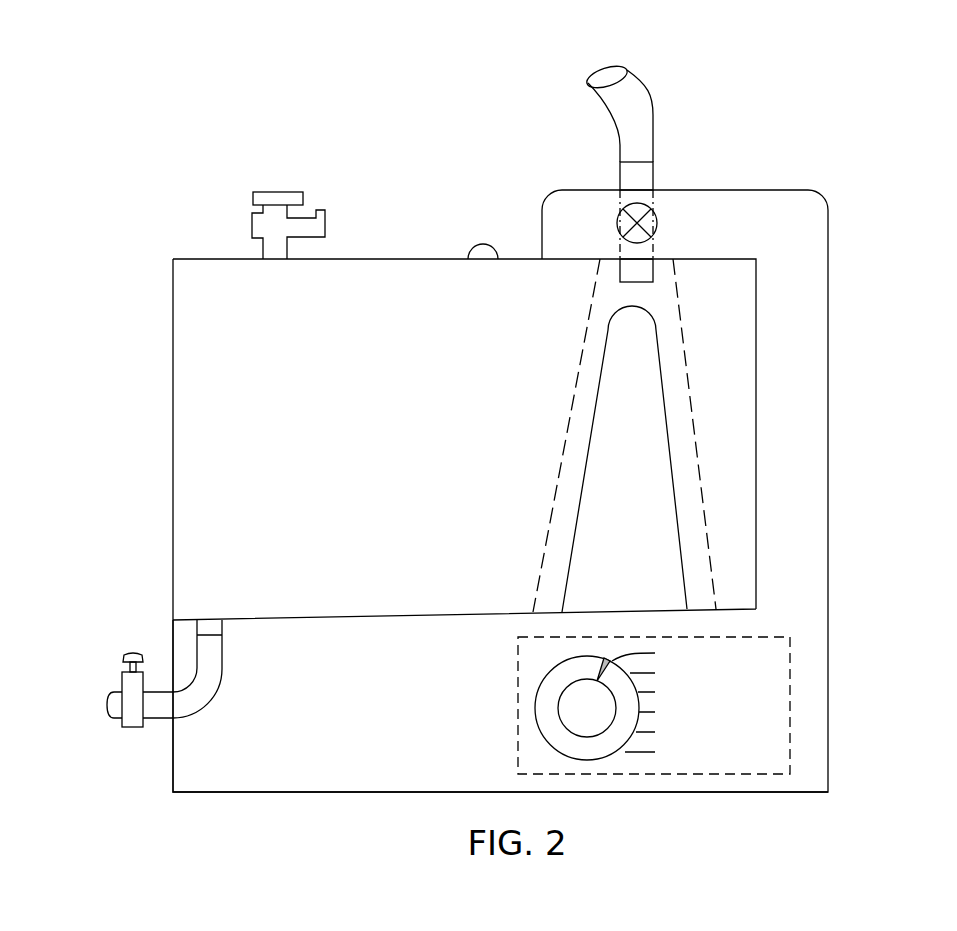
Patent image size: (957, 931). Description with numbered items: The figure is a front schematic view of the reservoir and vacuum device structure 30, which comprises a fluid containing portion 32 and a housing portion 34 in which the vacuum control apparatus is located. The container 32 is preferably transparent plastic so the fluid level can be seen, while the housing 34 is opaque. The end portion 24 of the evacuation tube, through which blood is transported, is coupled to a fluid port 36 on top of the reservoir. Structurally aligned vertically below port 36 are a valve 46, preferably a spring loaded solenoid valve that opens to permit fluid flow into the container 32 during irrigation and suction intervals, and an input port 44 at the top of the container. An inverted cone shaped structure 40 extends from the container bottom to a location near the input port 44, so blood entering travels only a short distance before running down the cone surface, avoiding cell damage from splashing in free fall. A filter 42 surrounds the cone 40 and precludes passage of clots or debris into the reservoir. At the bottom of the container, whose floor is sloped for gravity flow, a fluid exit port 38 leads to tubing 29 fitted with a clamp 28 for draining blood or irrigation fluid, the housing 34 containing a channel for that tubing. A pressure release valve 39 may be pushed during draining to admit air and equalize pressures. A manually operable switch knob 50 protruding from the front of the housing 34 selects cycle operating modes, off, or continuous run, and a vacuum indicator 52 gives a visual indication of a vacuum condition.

The end portion of the evacuation tube 24 is at (643, 91).
The clamp 28 is at (134, 652).
The tubing 29 is at (107, 705).
The reservoir and vacuum device structure 30 is at (835, 290).
The fluid containing portion 32 is at (292, 341).
The housing portion 34 is at (369, 711).
The fluid port 36 is at (645, 170).
The fluid exit port 38 is at (226, 627).
The pressure release valve 39 is at (252, 190).
The inverted cone shaped structure 40 is at (588, 455).
The filter 42 is at (565, 432).
The input port 44 is at (620, 270).
The valve 46 is at (660, 222).
The switch knob 50 is at (537, 725).
The vacuum indicator 52 is at (482, 243).